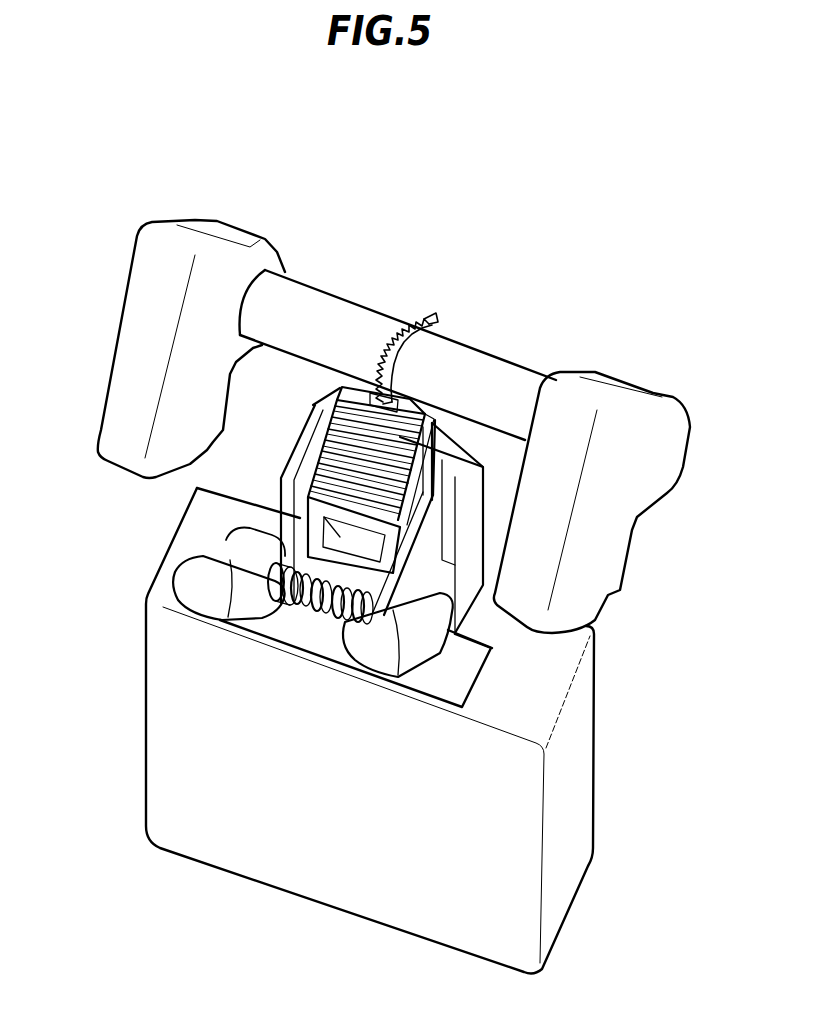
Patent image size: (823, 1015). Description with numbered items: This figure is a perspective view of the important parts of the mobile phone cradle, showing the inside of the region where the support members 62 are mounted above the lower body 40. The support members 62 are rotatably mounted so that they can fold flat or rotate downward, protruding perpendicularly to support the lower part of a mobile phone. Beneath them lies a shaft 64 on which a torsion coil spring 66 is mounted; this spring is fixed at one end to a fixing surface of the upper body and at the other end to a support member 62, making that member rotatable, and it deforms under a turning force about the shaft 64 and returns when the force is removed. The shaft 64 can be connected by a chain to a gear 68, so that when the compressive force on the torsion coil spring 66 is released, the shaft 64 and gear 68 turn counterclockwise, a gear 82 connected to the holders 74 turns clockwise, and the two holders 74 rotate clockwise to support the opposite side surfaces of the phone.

The lower body 40 is at (578, 752).
The support members 62 is at (360, 650).
The shaft 64 is at (322, 602).
The torsion coil spring 66 is at (283, 550).
The gear 68 is at (337, 400).
The holders 74 is at (577, 387).
The gear 82 is at (427, 316).